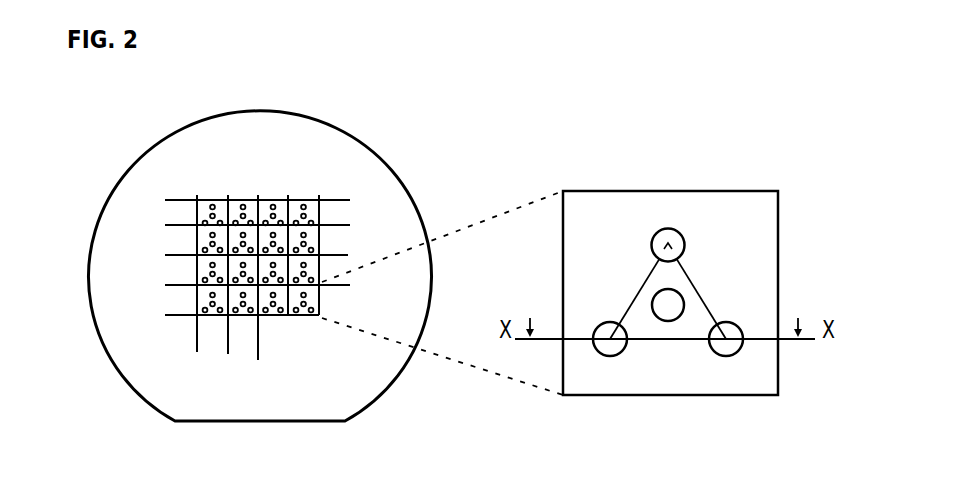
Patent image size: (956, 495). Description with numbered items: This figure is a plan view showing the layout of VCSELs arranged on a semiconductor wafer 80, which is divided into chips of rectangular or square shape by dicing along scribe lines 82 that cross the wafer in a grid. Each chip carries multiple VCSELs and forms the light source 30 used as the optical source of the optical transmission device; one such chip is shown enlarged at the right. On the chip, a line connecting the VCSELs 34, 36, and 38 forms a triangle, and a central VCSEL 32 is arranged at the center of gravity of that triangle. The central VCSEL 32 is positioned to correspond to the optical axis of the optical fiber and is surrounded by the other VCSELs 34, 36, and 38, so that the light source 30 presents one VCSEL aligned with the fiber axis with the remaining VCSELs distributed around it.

The light source 30 is at (212, 200).
The central VCSEL 32 is at (683, 297).
The VCSEL 34 is at (668, 228).
The VCSEL 36 is at (608, 356).
The VCSEL 38 is at (725, 356).
The semiconductor wafer 80 is at (355, 178).
The scribe lines 82 is at (180, 200).